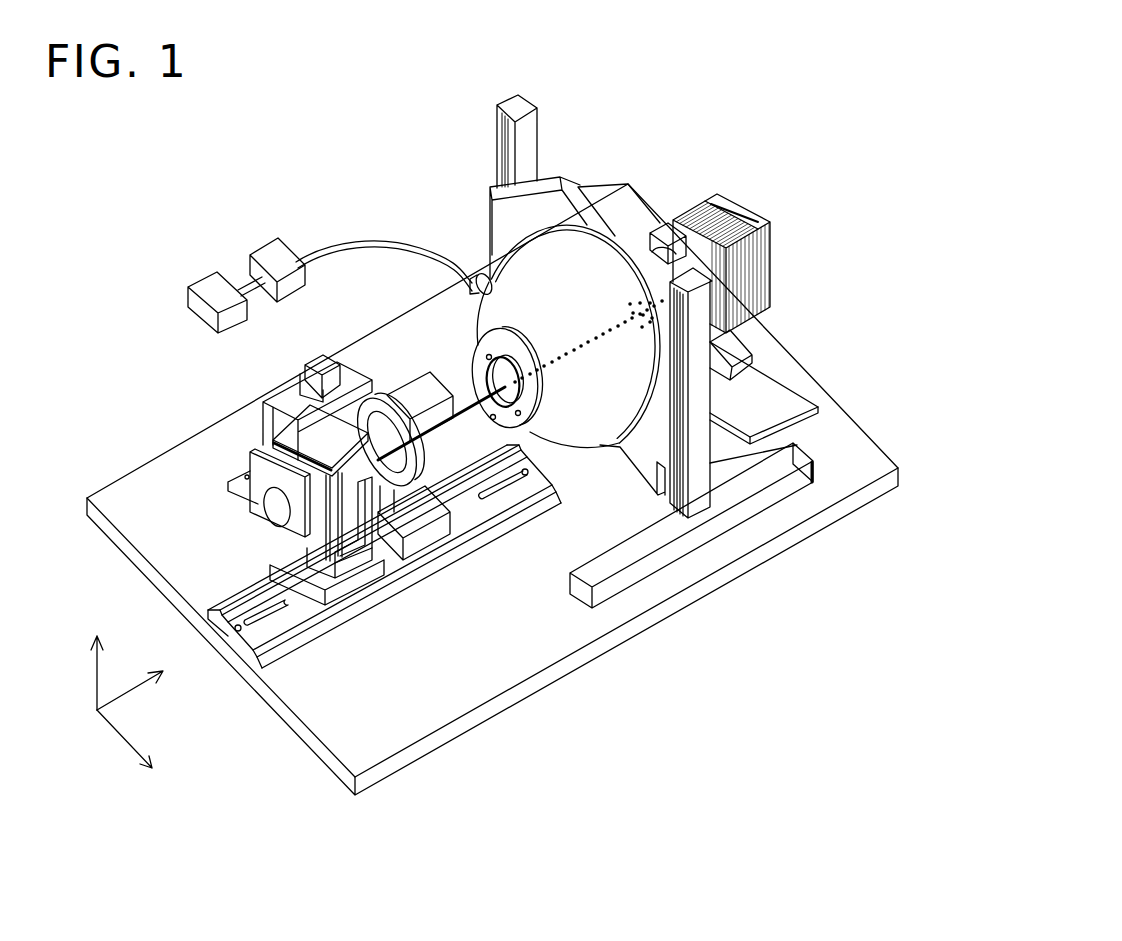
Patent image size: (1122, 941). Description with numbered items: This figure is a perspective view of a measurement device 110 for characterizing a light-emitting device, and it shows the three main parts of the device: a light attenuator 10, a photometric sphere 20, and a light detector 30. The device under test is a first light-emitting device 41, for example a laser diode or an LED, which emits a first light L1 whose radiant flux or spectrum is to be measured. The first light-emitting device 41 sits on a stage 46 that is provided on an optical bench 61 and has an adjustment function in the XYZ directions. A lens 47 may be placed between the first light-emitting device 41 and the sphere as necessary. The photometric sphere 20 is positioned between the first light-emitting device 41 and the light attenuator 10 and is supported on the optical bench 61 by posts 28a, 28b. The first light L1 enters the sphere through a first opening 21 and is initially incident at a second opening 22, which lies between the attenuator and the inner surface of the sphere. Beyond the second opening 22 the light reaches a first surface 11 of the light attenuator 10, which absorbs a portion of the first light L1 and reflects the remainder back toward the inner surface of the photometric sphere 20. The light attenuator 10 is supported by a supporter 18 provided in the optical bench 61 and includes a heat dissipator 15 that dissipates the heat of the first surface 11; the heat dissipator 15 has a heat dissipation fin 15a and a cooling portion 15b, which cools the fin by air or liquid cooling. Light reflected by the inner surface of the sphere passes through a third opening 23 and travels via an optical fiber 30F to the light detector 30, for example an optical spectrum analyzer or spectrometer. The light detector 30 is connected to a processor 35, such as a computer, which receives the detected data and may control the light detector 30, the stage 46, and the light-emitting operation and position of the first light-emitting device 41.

The measurement device 110 is at (881, 153).
The light attenuator 10 is at (808, 167).
The first surface 11 is at (693, 266).
The heat dissipator 15 is at (736, 248).
The heat dissipation fin 15a is at (690, 218).
The cooling portion 15b is at (731, 215).
The supporter 18 is at (785, 399).
The photometric sphere 20 is at (492, 322).
The first opening 21 is at (493, 387).
The second opening 22 is at (669, 264).
The third opening 23 is at (488, 273).
The post 28a is at (505, 138).
The post 28b is at (697, 427).
The light detector 30 is at (267, 253).
The optical fiber 30F is at (358, 247).
The processor 35 is at (210, 287).
The first light-emitting device 41 is at (367, 440).
The stage 46 is at (275, 560).
The lens 47 is at (392, 455).
The optical bench 61 is at (405, 722).
The first light L1 is at (458, 413).